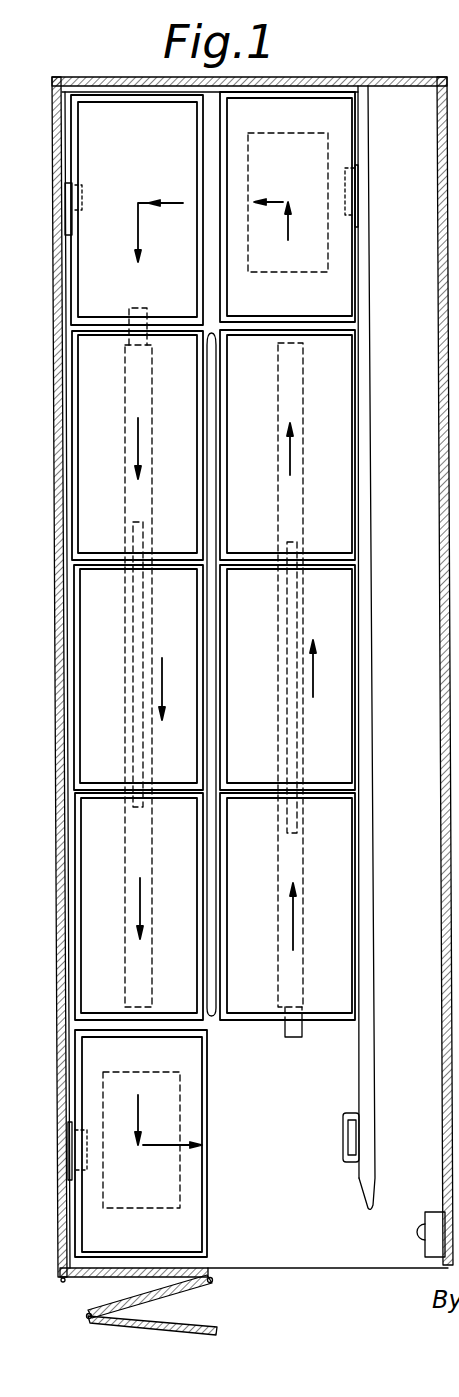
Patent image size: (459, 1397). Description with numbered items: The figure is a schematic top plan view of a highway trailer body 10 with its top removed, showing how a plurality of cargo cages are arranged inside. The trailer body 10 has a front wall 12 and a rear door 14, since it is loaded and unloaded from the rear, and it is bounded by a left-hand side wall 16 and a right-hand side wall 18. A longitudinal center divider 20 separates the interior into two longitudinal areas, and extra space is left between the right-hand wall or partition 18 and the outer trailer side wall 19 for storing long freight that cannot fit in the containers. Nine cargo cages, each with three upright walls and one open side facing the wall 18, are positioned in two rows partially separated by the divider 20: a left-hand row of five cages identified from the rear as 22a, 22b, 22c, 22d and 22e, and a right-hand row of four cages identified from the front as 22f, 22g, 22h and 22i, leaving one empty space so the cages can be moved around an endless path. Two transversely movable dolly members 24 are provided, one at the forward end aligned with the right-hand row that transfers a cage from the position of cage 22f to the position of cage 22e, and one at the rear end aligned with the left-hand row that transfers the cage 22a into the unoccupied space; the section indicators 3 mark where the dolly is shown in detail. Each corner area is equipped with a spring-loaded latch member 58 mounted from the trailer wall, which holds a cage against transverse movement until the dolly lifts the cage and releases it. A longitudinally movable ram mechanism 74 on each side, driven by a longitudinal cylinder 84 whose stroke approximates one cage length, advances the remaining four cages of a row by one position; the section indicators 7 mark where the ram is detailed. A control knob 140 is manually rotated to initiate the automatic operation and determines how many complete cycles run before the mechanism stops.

The highway trailer body 10 is at (108, 66).
The front wall 12 is at (352, 77).
The rear door 14 is at (187, 1292).
The left-hand side wall 16 is at (53, 495).
The right-hand side wall 18 is at (367, 522).
The outer trailer side wall 19 is at (440, 656).
The longitudinal center divider 20 is at (213, 497).
The cargo container 22a is at (145, 1062).
The cargo container 22b is at (118, 857).
The cargo container 22c is at (108, 674).
The cargo container 22d is at (108, 410).
The cargo container 22e is at (158, 149).
The cargo container 22f is at (275, 128).
The cargo container 22g is at (262, 408).
The cargo container 22h is at (262, 648).
The cargo container 22i is at (262, 873).
The transversely movable dolly member 24 is at (334, 148).
The spring-loaded latch member 58 is at (362, 160).
The longitudinally movable ram mechanism 74 is at (158, 483).
The longitudinal cylinder 84 is at (148, 757).
The control knob 140 is at (420, 1238).
The section line FIG. 7 is at (315, 343).
The section line FIG. 3 is at (92, 1213).